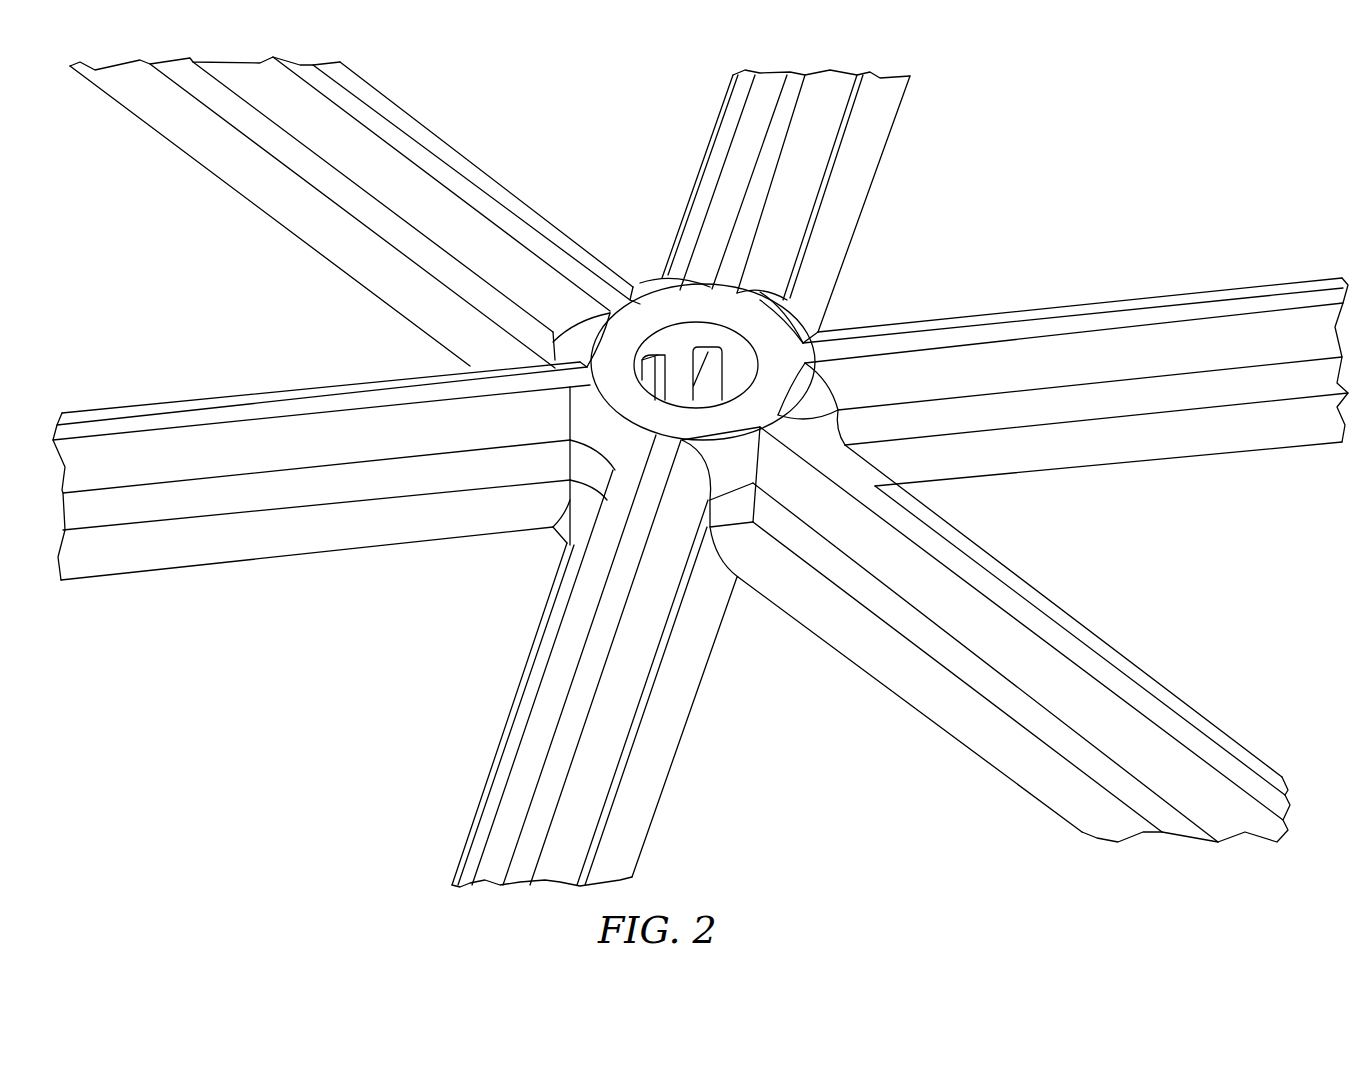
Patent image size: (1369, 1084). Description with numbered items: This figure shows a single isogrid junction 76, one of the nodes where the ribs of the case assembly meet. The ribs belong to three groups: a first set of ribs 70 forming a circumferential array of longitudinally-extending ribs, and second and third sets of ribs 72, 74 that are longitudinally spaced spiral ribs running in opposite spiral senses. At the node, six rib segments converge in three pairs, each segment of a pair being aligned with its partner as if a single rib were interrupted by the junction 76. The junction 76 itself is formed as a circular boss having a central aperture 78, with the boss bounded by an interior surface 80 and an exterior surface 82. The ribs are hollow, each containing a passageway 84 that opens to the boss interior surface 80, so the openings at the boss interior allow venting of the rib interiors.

The first set of ribs 70 is at (455, 125).
The second set of ribs 72 is at (1078, 300).
The third set of ribs 74 is at (910, 147).
The junction 76 is at (688, 391).
The central aperture 78 is at (673, 342).
The interior surface 80 is at (652, 350).
The exterior surface 82 is at (560, 538).
The passageway 84 is at (690, 383).